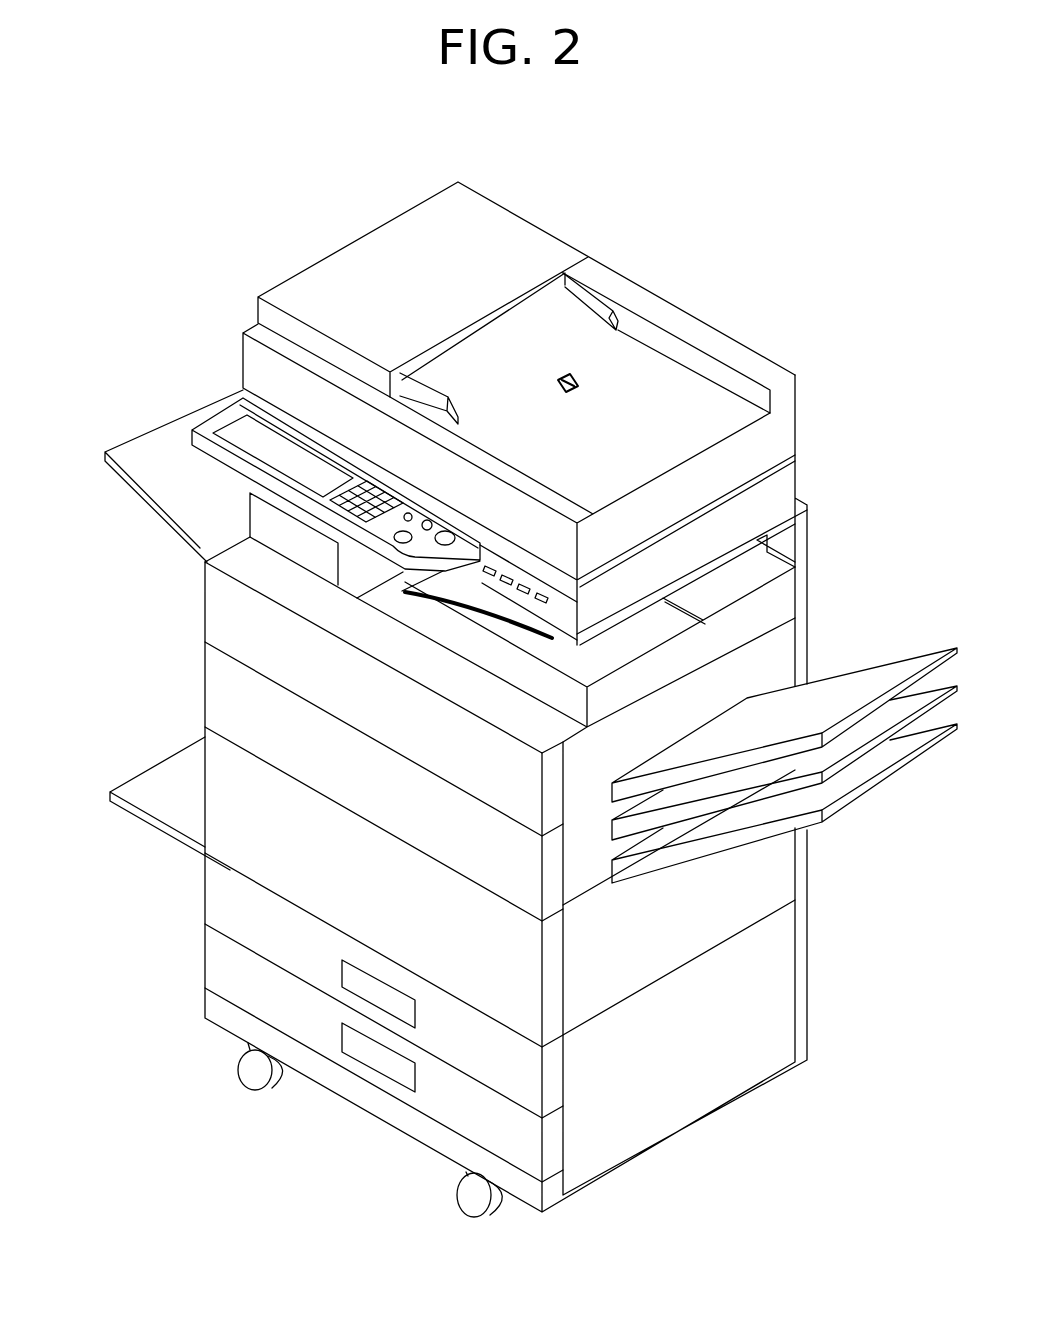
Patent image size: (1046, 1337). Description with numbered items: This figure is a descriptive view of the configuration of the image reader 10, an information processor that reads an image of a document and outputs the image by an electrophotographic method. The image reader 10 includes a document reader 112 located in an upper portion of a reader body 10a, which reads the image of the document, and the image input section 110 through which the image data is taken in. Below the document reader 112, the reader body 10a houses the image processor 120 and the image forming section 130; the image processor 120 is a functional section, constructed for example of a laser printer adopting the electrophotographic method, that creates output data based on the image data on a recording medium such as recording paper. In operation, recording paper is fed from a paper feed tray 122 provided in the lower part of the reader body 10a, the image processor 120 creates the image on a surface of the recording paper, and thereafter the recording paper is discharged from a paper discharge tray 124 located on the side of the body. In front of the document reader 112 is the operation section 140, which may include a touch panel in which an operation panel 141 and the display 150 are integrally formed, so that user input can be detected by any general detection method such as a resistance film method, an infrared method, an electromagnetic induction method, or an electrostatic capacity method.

The image reader 10 is at (820, 306).
The reader body 10a is at (808, 621).
The image input section 110 is at (808, 468).
The document reader 112 is at (700, 532).
The image processor 120 is at (170, 803).
The image forming section 130 is at (202, 697).
The paper feed tray 122 is at (187, 973).
The paper discharge tray 124 is at (873, 806).
The operation section 140 is at (330, 513).
The operation panel 141 is at (283, 456).
The display 150 is at (238, 422).